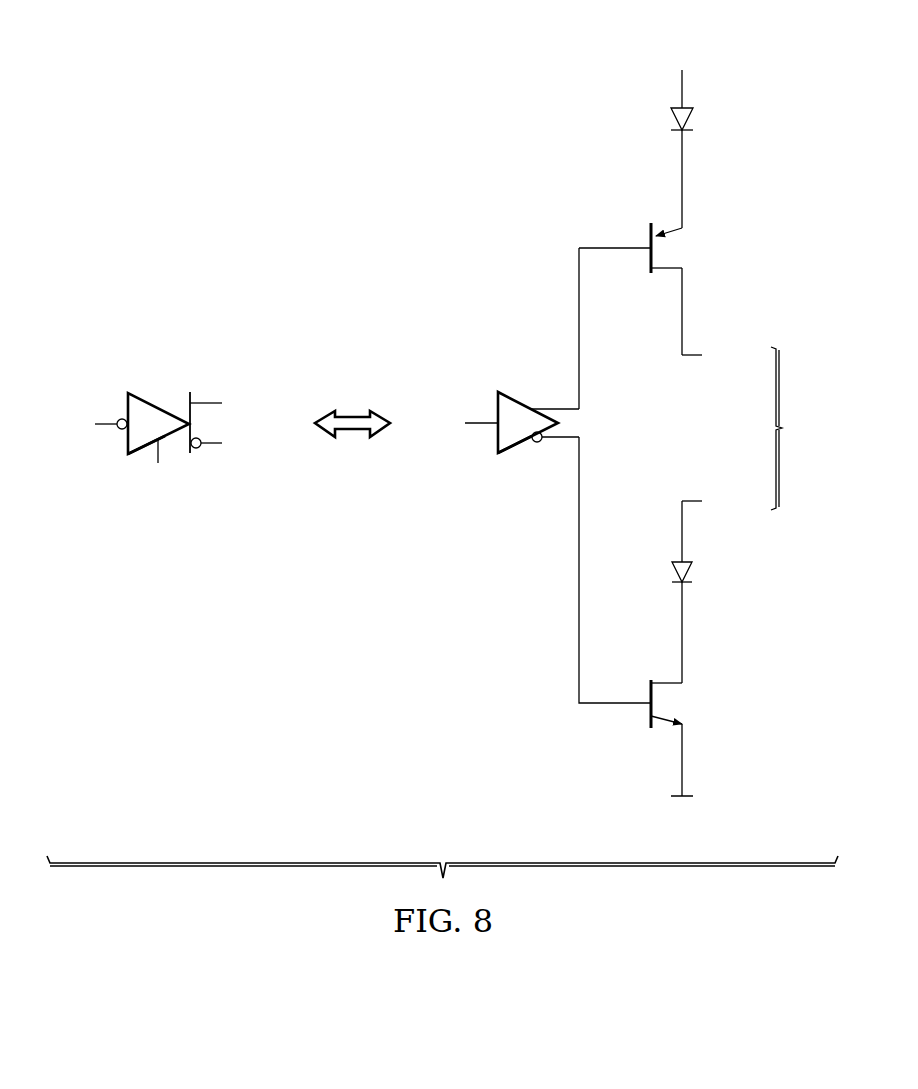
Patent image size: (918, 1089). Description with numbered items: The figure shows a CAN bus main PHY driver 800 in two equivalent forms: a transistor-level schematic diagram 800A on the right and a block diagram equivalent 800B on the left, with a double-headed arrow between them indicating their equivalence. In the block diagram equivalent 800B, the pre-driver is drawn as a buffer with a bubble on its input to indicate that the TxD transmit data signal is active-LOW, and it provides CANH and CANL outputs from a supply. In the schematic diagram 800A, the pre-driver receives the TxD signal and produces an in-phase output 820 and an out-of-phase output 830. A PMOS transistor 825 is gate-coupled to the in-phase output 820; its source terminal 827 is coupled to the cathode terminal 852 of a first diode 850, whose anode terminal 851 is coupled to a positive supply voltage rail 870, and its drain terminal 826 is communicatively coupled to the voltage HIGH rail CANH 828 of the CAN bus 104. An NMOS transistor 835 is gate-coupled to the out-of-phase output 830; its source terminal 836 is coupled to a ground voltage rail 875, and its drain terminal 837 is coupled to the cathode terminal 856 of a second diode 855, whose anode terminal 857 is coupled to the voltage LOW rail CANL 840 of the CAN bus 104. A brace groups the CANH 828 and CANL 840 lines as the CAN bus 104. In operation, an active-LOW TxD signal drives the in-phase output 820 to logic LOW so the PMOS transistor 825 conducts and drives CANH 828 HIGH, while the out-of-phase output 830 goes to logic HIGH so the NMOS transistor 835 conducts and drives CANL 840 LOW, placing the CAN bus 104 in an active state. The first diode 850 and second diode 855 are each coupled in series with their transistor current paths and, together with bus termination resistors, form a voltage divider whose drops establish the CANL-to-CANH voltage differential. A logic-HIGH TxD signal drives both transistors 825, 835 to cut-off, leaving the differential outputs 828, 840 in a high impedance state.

The CAN bus main PHY driver 800 is at (205, 204).
The schematic diagram 800A is at (505, 226).
The block diagram equivalent 800B is at (242, 298).
The in-phase output 820 is at (578, 326).
The PMOS transistor 825 is at (645, 238).
The drain terminal 826 is at (668, 273).
The source terminal 827 is at (668, 224).
The differential output bus line CANH 828 is at (690, 358).
The out-of-phase output 830 is at (578, 590).
The NMOS transistor 835 is at (645, 720).
The source terminal 836 is at (661, 730).
The drain terminal 837 is at (661, 682).
The differential output bus line CANL 840 is at (692, 499).
The first diode 850 is at (668, 124).
The anode terminal 851 is at (692, 116).
The cathode terminal 852 is at (690, 132).
The second diode 855 is at (696, 572).
The cathode terminal 856 is at (674, 582).
The anode terminal 857 is at (670, 566).
The positive supply voltage rail 870 is at (660, 46).
The ground voltage rail 875 is at (688, 799).
The CAN bus 104 is at (805, 428).